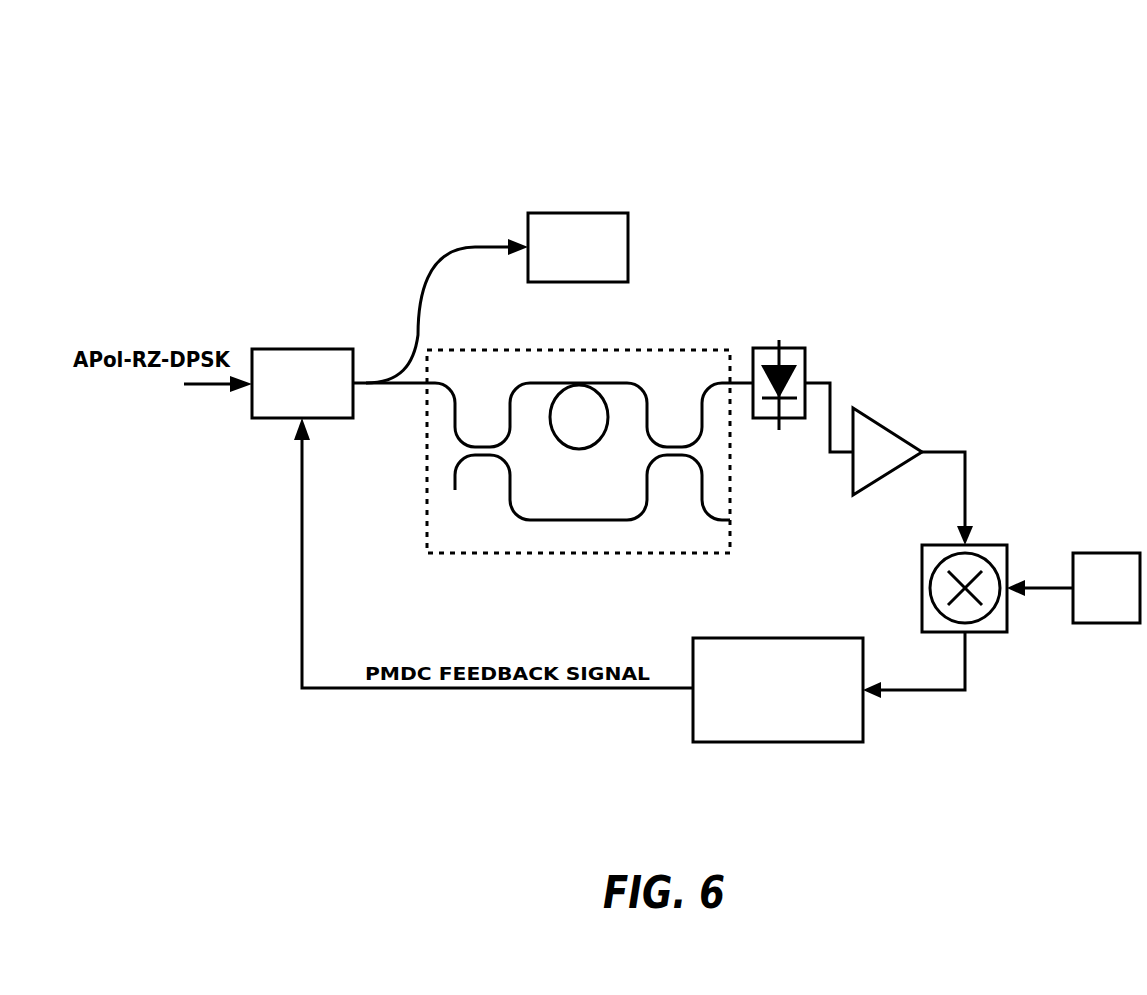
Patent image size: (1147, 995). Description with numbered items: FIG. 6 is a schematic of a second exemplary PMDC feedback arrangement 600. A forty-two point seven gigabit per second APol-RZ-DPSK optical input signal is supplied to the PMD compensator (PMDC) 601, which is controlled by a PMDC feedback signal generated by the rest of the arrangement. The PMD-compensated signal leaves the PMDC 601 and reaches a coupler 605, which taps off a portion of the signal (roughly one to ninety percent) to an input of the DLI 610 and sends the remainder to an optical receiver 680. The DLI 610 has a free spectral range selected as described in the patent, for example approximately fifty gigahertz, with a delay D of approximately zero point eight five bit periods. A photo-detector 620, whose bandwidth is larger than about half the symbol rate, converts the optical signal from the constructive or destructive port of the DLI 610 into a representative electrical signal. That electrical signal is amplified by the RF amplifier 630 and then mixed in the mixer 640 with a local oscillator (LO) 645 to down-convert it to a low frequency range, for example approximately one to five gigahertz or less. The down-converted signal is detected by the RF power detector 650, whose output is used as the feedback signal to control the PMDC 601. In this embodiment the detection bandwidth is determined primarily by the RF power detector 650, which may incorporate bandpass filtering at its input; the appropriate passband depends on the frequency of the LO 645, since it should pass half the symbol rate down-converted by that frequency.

The PMDC feedback arrangement 600 is at (681, 39).
The PMD compensator (PMDC) 601 is at (312, 349).
The coupler 605 is at (390, 393).
The DLI (delay line interferometer) 610 is at (676, 350).
The photo-detector 620 is at (798, 348).
The RF amplifier 630 is at (898, 436).
The mixer 640 is at (1010, 545).
The local oscillator (LO) 645 is at (1110, 553).
The RF power detector 650 is at (780, 638).
The optical receiver 680 is at (589, 213).